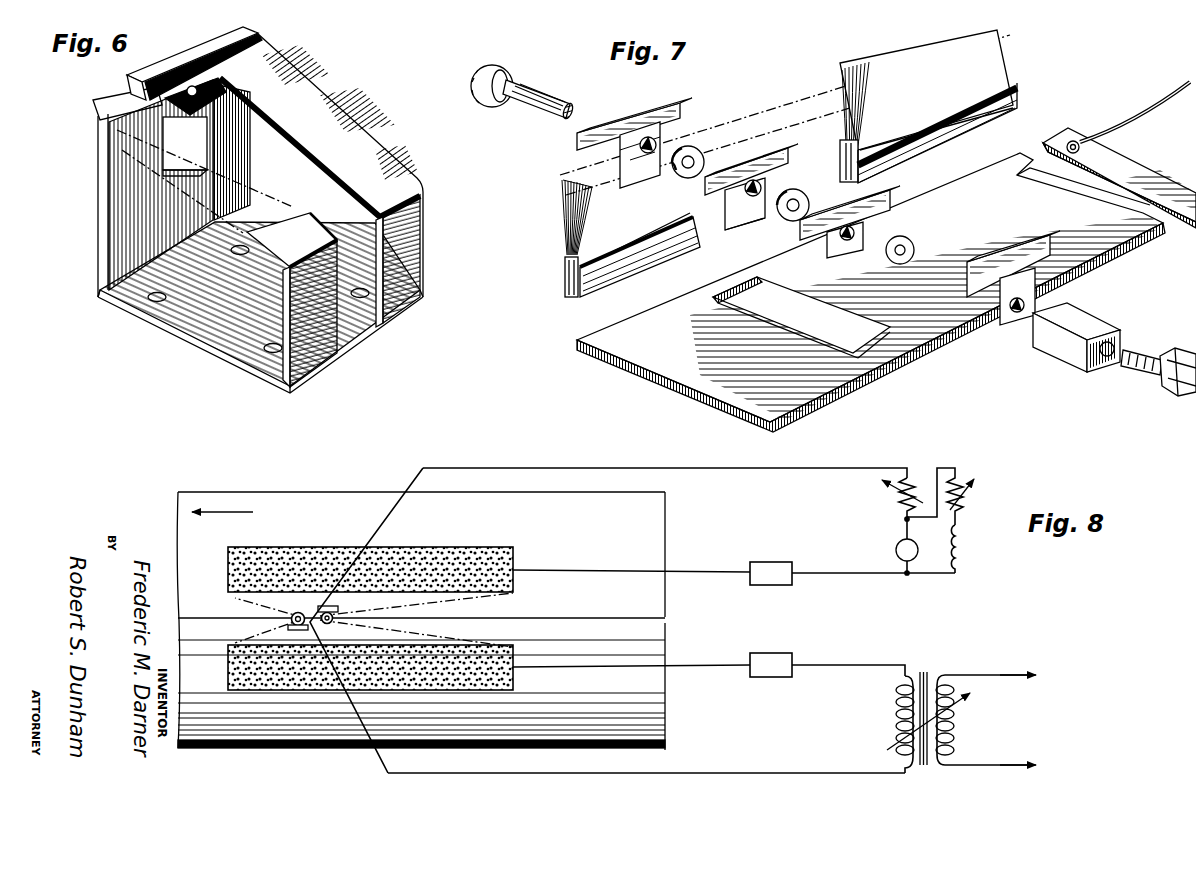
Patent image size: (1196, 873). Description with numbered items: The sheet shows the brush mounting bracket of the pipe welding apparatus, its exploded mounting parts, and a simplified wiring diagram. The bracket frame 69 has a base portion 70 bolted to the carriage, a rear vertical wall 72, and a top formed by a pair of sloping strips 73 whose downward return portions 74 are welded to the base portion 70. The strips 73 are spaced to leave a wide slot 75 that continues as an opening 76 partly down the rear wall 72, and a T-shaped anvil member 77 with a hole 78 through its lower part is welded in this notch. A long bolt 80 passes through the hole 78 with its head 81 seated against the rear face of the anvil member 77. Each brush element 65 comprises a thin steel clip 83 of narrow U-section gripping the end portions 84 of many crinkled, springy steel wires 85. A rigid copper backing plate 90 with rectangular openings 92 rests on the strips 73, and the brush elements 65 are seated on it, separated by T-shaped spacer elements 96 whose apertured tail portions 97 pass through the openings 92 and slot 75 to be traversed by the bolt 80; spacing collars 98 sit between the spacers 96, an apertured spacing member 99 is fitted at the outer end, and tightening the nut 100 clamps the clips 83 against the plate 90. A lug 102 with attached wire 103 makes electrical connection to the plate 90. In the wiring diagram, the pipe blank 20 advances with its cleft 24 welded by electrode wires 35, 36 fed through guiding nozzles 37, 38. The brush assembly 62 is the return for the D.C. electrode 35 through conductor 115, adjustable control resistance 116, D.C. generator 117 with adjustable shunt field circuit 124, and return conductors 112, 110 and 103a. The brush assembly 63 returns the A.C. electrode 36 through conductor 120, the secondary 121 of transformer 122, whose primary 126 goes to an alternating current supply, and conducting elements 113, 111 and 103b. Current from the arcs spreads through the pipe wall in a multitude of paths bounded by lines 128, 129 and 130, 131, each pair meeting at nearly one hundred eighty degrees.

In FIG. 6, the bracket frame 69 is at (97, 298).
In FIG. 6, the base portion 70 is at (243, 368).
In FIG. 6, the rear vertical wall 72 is at (97, 215).
In FIG. 6, the sloping strips 73 is at (273, 247).
In FIG. 6, the downward return portions 74 is at (410, 265).
In FIG. 6, the slot 75 is at (310, 172).
In FIG. 6, the opening 76 is at (167, 152).
In FIG. 6, the T-shaped anvil member 77 is at (195, 43).
In FIG. 7, the T-shaped anvil member 77 is at (676, 104).
In FIG. 6, the hole 78 is at (222, 70).
In FIG. 7, the long bolt 80 is at (560, 95).
In FIG. 7, the bolt head 81 is at (475, 74).
In FIG. 7, the clip 83 is at (602, 288).
In FIG. 7, the end portions of wires 84 is at (563, 269).
In FIG. 7, the steel wires 85 is at (561, 199).
In FIG. 7, the brush element 65 is at (560, 292).
In FIG. 7, the backing plate 90 is at (652, 366).
In FIG. 7, the rectangular openings 92 is at (777, 330).
In FIG. 7, the T-shaped spacer elements 96 is at (770, 150).
In FIG. 7, the apertured tail portions 97 is at (733, 216).
In FIG. 7, the spacing collars 98 is at (797, 196).
In FIG. 7, the apertured spacing member 99 is at (1092, 327).
In FIG. 7, the nut 100 is at (1182, 390).
In FIG. 7, the lug 102 is at (1072, 141).
In FIG. 7, the wire 103 is at (1162, 98).
In FIG. 8, the pipe blank 20 is at (243, 748).
In FIG. 8, the cleft 24 is at (665, 632).
In FIG. 8, the electrode wire 35 is at (340, 613).
In FIG. 8, the electrode wire 36 is at (286, 617).
In FIG. 8, the guiding nozzle 37 is at (330, 624).
In FIG. 8, the guiding nozzle 38 is at (299, 611).
In FIG. 8, the brush assembly 62 is at (290, 546).
In FIG. 8, the brush assembly 63 is at (256, 677).
In FIG. 8, the return conductor 103a is at (722, 562).
In FIG. 8, the conducting element 103b is at (696, 655).
In FIG. 8, the return conductor 110 is at (771, 573).
In FIG. 8, the conducting element 111 is at (771, 665).
In FIG. 8, the return conductor 112 is at (816, 578).
In FIG. 8, the conducting element 113 is at (820, 662).
In FIG. 8, the conductor 115 is at (606, 466).
In FIG. 8, the adjustable control resistance 116 is at (912, 480).
In FIG. 8, the D.C. generator 117 is at (896, 551).
In FIG. 8, the conductor 120 is at (755, 778).
In FIG. 8, the transformer secondary 121 is at (898, 706).
In FIG. 8, the transformer 122 is at (924, 675).
In FIG. 8, the adjustable shunt field circuit 124 is at (960, 549).
In FIG. 8, the transformer primary 126 is at (952, 733).
In FIG. 8, the current path boundary line 128 is at (240, 637).
In FIG. 8, the current path boundary line 129 is at (432, 640).
In FIG. 8, the current path boundary line 130 is at (240, 599).
In FIG. 8, the current path boundary line 131 is at (432, 605).